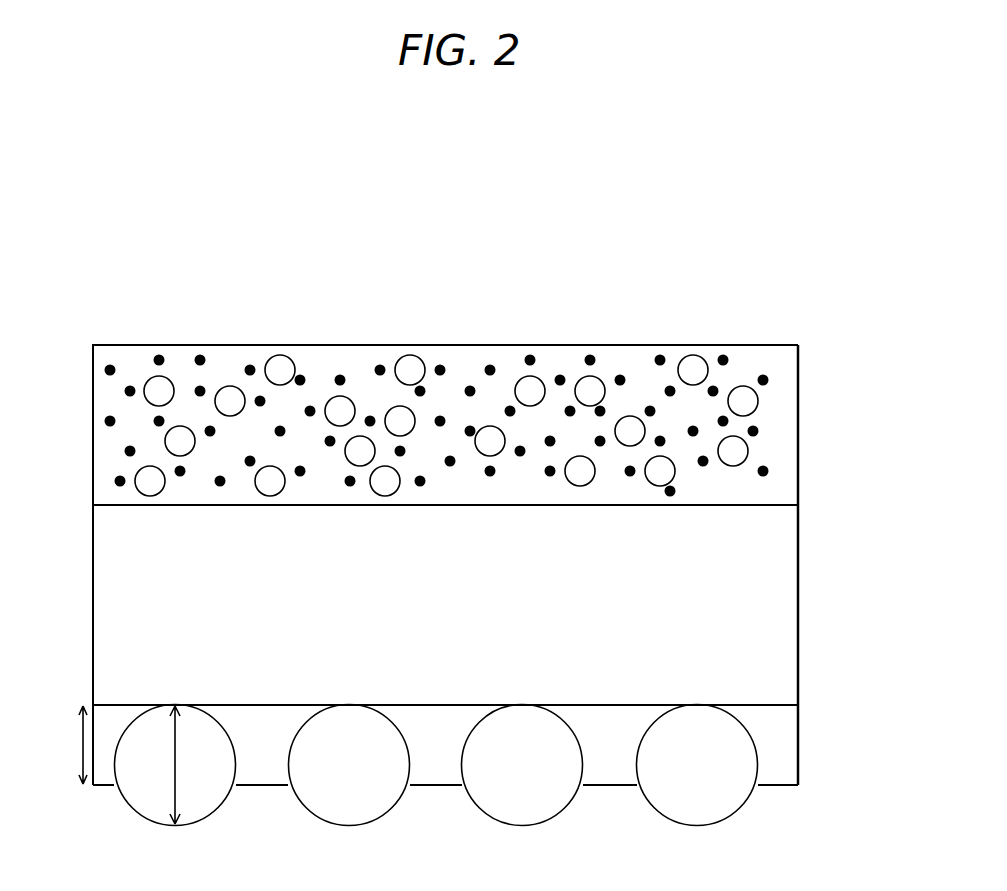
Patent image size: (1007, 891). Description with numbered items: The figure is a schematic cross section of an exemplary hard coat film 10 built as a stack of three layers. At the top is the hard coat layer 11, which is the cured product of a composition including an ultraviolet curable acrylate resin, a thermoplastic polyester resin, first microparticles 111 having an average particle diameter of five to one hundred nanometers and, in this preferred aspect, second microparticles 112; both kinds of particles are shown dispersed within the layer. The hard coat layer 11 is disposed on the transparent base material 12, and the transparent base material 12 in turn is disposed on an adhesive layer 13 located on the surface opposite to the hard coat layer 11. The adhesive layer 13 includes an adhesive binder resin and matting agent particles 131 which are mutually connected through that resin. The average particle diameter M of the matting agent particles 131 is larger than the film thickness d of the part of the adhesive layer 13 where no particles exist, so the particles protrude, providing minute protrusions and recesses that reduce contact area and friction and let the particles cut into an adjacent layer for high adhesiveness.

The hard coat film 10 is at (462, 308).
The hard coat layer 11 is at (805, 345).
The first microparticles 111 is at (723, 358).
The second microparticles 112 is at (692, 356).
The transparent base material 12 is at (805, 505).
The adhesive layer 13 is at (805, 705).
The matting agent particles 131 is at (707, 767).